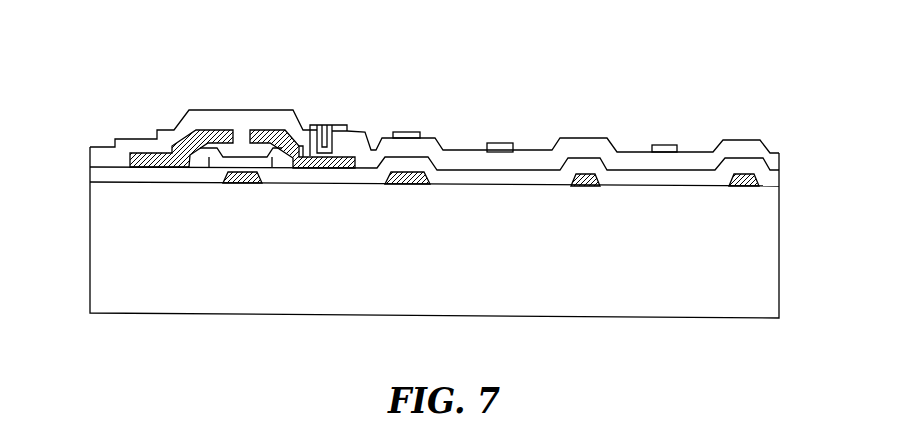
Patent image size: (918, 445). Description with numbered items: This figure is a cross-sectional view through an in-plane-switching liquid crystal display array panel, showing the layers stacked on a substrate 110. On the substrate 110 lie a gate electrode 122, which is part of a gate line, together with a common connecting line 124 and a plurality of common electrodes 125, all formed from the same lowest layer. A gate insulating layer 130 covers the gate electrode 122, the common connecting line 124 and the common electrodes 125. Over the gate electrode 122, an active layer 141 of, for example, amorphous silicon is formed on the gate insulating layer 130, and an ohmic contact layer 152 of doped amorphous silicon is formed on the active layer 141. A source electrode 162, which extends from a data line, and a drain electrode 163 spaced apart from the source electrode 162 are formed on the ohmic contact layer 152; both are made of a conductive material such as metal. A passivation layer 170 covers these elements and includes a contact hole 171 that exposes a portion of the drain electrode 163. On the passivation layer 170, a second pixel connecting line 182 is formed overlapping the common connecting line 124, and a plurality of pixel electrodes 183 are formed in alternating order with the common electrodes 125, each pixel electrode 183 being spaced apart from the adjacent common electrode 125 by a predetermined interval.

The substrate 110 is at (483, 290).
The gate electrode 122 is at (243, 185).
The common connecting line 124 is at (406, 186).
The common electrode 125 is at (586, 187).
The gate insulating layer 130 is at (342, 172).
The active layer 141 is at (243, 153).
The ohmic contact layer 152 is at (188, 108).
The source electrode 162 is at (215, 130).
The drain electrode 163 is at (265, 130).
The passivation layer 170 is at (152, 147).
The contact hole 171 is at (327, 119).
The second pixel connecting line 182 is at (405, 132).
The pixel electrode 183 is at (493, 143).